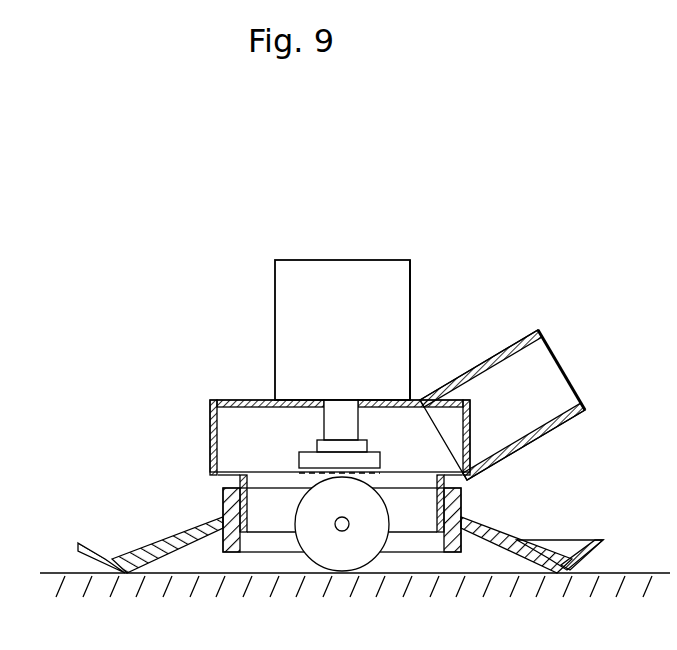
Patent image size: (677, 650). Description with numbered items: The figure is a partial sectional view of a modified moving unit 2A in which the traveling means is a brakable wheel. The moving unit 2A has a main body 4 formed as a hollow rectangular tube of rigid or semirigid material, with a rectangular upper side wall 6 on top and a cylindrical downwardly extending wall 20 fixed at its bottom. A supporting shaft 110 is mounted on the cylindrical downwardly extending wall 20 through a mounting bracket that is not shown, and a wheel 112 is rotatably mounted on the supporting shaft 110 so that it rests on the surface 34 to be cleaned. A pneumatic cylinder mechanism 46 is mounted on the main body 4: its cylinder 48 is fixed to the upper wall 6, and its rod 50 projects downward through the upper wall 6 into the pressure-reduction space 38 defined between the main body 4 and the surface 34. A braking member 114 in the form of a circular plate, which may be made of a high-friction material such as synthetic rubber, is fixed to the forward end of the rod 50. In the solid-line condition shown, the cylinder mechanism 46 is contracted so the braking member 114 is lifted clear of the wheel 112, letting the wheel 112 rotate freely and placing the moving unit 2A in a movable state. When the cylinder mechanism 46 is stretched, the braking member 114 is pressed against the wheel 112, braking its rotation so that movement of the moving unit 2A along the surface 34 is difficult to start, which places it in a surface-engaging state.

The moving unit 2A is at (340, 405).
The main body 4 is at (340, 388).
The upper side wall 6 is at (290, 400).
The cylindrical downwardly extending wall 20 is at (433, 513).
The surface to be cleaned 34 is at (641, 573).
The pressure-reduction space 38 is at (316, 562).
The pneumatic cylinder mechanism 46 is at (376, 280).
The cylinder 48 is at (403, 305).
The rod 50 is at (360, 420).
The supporting shaft 110 is at (348, 520).
The wheel 112 is at (333, 563).
The braking member 114 is at (380, 460).